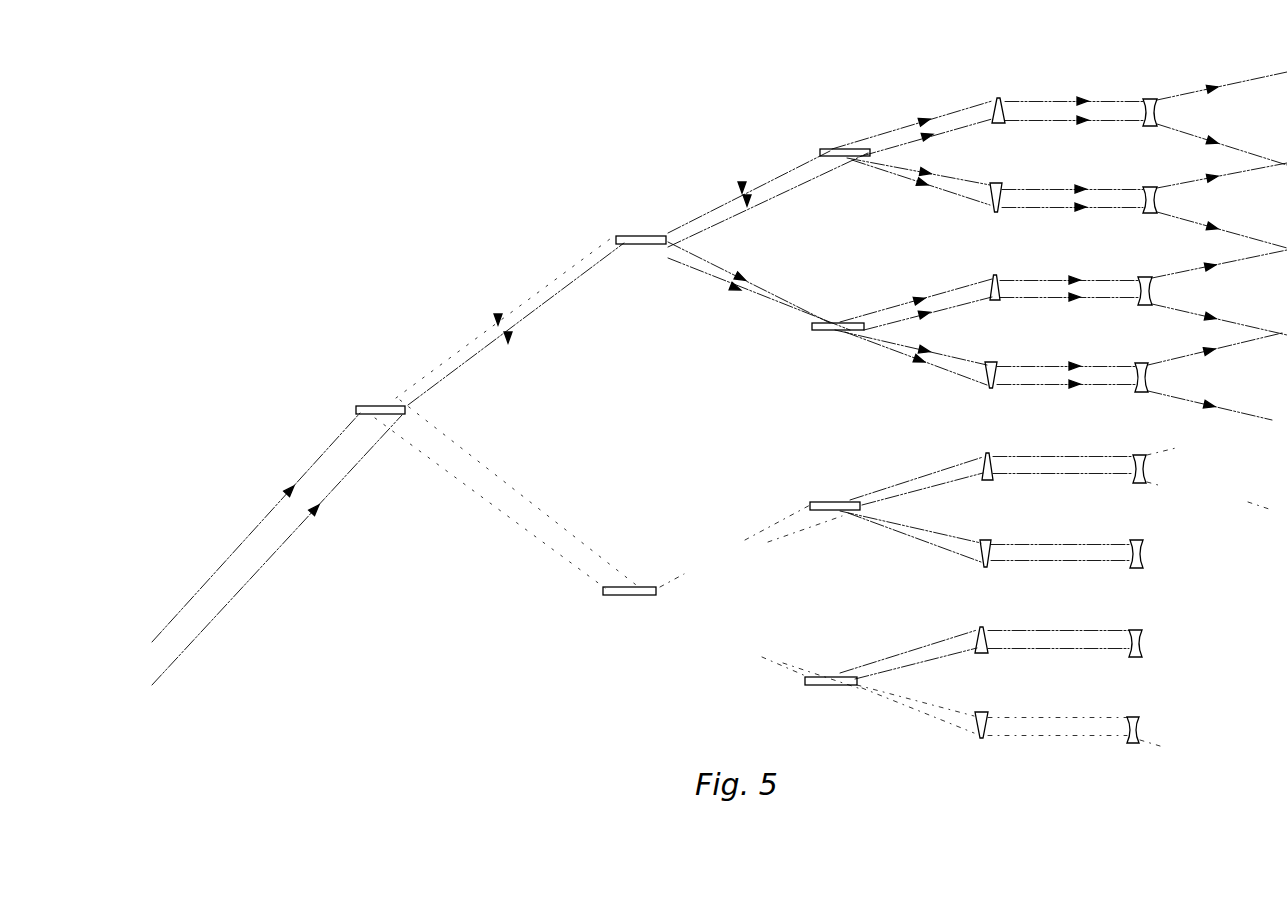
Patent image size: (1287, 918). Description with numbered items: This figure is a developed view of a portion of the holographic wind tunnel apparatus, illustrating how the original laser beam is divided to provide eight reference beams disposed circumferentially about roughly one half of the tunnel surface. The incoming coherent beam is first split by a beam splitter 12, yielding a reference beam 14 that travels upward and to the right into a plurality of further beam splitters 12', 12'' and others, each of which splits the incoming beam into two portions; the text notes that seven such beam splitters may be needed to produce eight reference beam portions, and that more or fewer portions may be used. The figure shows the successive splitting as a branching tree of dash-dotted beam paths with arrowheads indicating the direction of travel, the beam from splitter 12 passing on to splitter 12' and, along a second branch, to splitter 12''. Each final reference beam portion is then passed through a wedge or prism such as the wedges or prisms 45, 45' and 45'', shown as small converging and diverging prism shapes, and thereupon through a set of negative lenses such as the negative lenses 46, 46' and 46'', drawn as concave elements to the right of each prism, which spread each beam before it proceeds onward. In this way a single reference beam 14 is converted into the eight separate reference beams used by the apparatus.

The beam splitter 12 is at (360, 393).
The beam splitter 12' is at (619, 228).
The beam splitter 12'' is at (611, 604).
The reference beam 14 is at (228, 558).
The wedge or prism 45 is at (1001, 715).
The wedge or prism 45' is at (1005, 629).
The wedge or prism 45'' is at (1009, 541).
The negative lens 46 is at (1117, 748).
The negative lens 46' is at (1119, 659).
The negative lens 46'' is at (1120, 570).